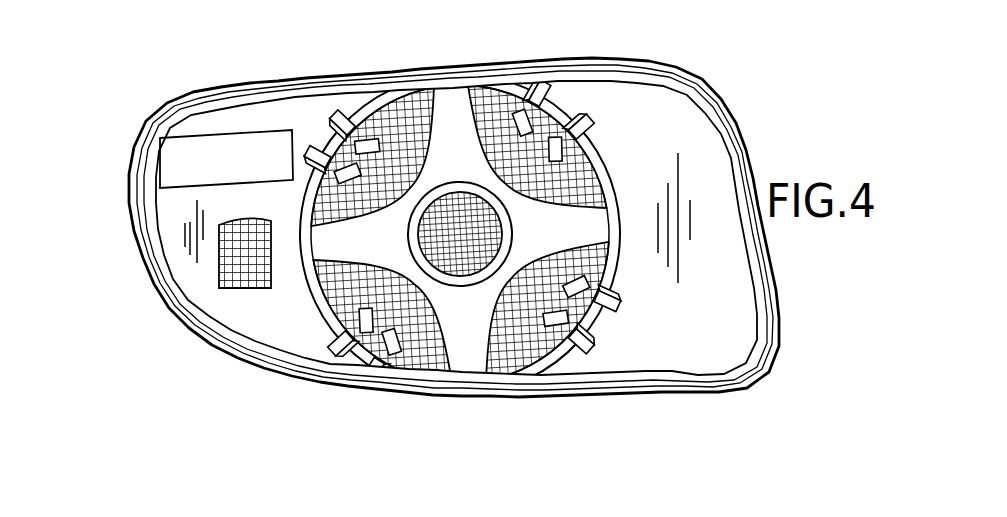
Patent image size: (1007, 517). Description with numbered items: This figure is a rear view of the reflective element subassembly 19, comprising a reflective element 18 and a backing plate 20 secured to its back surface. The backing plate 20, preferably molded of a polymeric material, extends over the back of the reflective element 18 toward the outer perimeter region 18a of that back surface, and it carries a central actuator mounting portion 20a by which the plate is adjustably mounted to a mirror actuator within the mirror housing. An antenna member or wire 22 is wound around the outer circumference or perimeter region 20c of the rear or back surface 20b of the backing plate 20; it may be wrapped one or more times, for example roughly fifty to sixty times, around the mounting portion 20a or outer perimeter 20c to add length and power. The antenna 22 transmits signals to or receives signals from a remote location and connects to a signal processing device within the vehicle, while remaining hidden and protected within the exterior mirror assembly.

The reflective element subassembly 19 is at (230, 63).
The antenna member or wire 22 is at (307, 83).
The reflective element 18 is at (130, 155).
The outer perimeter region of the back surface of the reflective element 18a is at (145, 208).
The backing plate 20 is at (730, 293).
The actuator mounting portion 20a is at (340, 370).
The rear or back surface of the backing plate 20b is at (265, 370).
The outer circumference or perimeter region or edge of the backing plate 20c is at (180, 257).